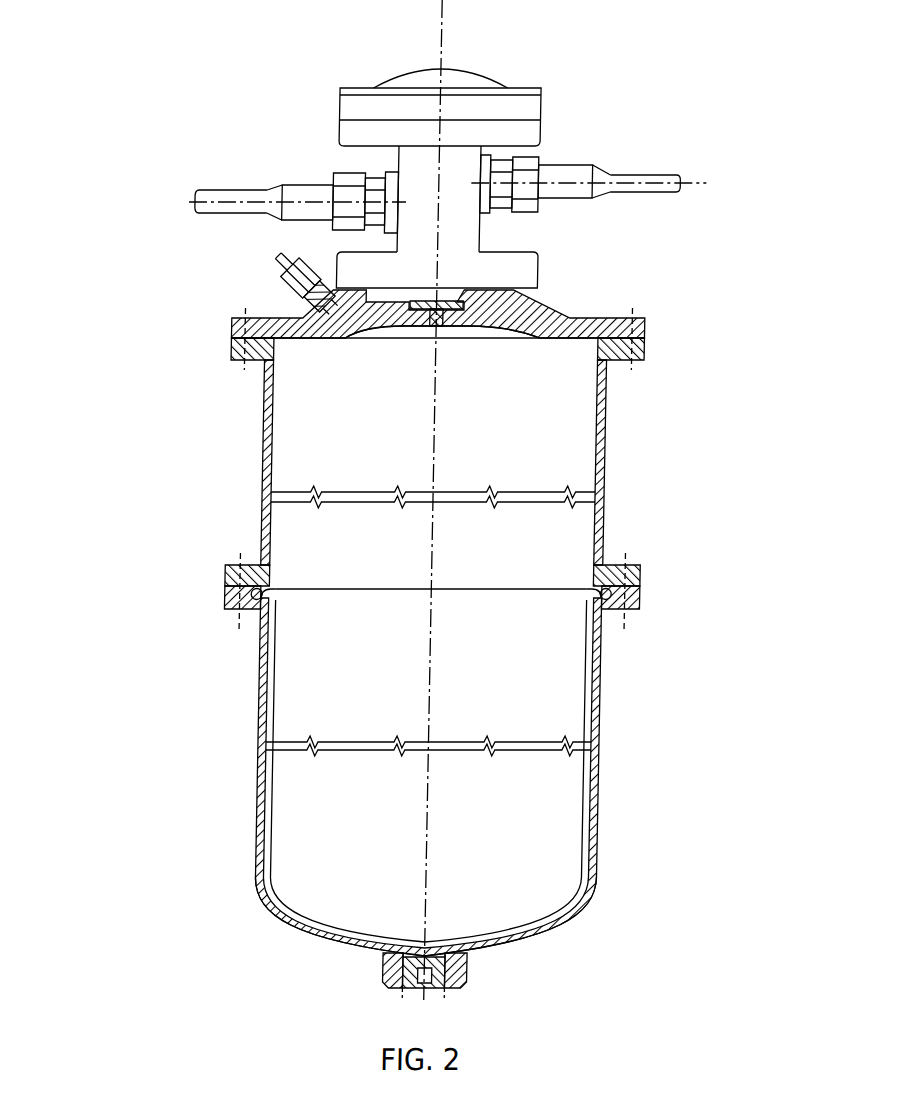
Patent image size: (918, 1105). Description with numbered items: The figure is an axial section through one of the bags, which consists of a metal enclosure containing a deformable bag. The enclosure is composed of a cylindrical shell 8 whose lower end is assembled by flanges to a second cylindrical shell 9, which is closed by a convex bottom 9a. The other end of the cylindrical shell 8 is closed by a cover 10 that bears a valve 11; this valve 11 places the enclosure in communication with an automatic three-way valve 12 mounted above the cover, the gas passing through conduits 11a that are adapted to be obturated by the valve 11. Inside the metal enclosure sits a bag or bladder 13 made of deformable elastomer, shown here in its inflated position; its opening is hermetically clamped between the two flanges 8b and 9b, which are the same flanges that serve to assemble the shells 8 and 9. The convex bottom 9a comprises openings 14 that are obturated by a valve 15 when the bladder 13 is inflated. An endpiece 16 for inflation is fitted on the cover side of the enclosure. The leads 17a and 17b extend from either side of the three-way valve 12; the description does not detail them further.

The cylindrical shell 8 is at (261, 520).
The flange 8b is at (631, 577).
The second cylindrical shell 9 is at (263, 778).
The convex bottom 9a is at (555, 933).
The flange 9b is at (640, 603).
The cover 10 is at (556, 298).
The valve 11 is at (463, 333).
The conduits 11a is at (398, 327).
The automatic three-way valve 12 is at (451, 165).
The bladder 13 is at (601, 667).
The openings 14 is at (411, 975).
The valve 15 is at (449, 957).
The endpiece for inflation 16 is at (306, 307).
The cable lead 17a is at (231, 205).
The cable lead 17b is at (643, 178).